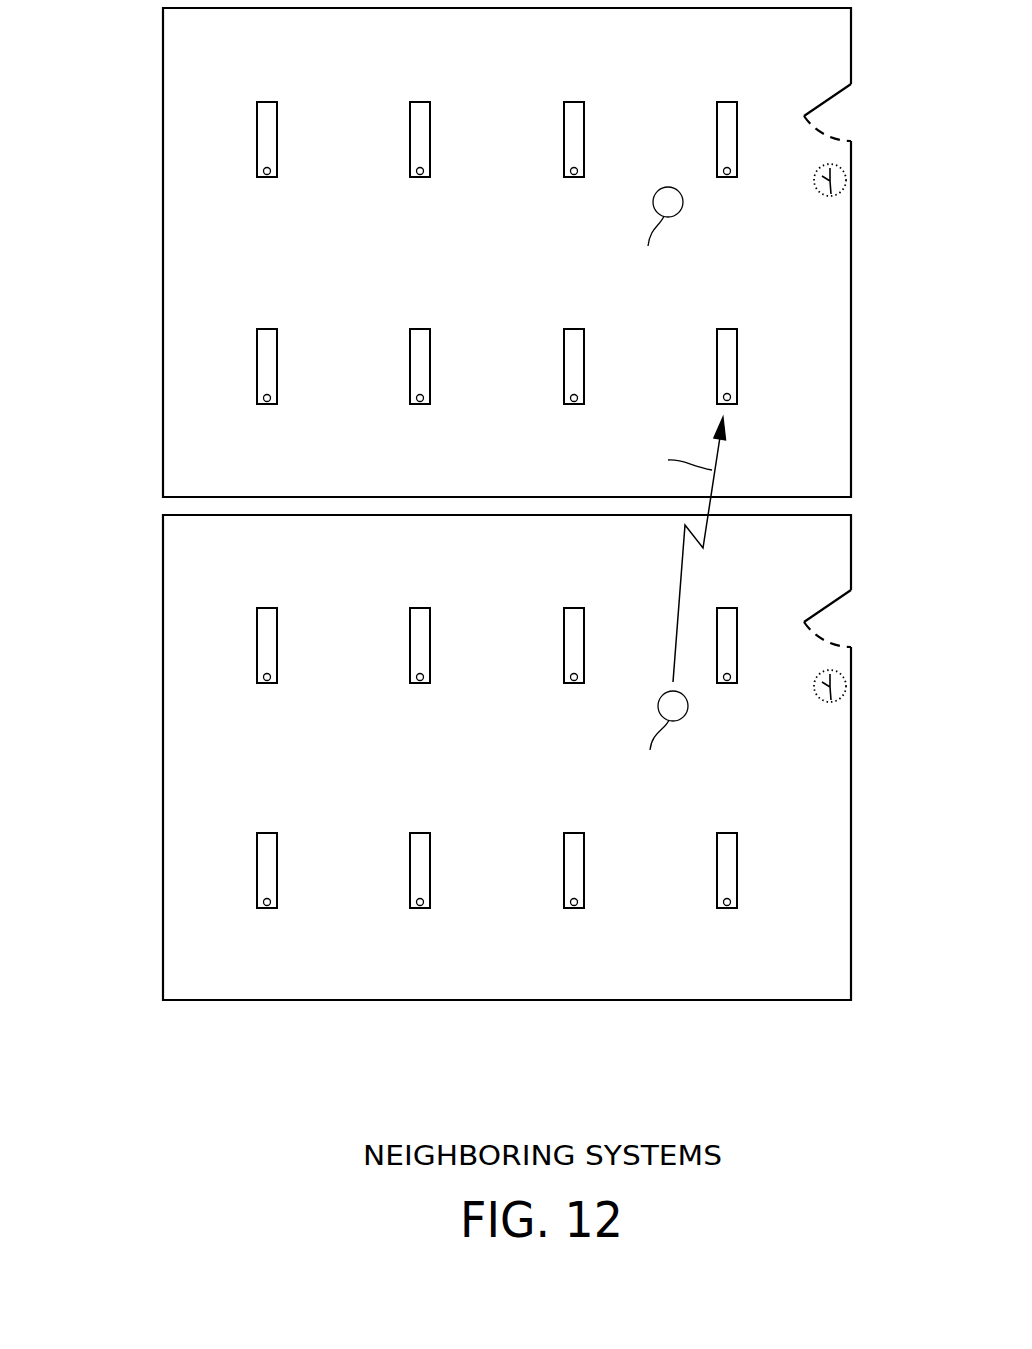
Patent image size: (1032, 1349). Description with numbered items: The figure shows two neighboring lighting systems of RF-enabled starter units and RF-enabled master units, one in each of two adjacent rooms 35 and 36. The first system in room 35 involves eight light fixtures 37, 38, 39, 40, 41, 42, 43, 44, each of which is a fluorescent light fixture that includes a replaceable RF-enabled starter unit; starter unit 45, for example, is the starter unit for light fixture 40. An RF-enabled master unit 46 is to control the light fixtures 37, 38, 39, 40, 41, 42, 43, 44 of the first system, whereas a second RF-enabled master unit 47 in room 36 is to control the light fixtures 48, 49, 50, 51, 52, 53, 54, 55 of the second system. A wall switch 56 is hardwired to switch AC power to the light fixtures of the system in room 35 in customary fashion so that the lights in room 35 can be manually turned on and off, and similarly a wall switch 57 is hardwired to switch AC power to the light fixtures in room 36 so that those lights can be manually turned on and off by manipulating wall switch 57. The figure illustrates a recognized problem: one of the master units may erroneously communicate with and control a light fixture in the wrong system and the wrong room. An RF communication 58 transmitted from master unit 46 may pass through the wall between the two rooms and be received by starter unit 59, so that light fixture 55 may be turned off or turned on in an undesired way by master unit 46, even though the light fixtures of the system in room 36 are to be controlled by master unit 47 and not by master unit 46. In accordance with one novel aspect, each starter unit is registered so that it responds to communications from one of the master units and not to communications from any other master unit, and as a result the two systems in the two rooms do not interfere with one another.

The room 35 is at (163, 581).
The room 36 is at (163, 78).
The light fixture 37 is at (267, 608).
The light fixture 38 is at (420, 608).
The light fixture 39 is at (574, 608).
The light fixture 40 is at (727, 608).
The light fixture 41 is at (267, 833).
The light fixture 42 is at (420, 833).
The light fixture 43 is at (574, 833).
The light fixture 44 is at (727, 833).
The starter unit 45 is at (727, 681).
The RF-enabled master unit 46 is at (687, 710).
The RF-enabled master unit 47 is at (682, 206).
The light fixture 48 is at (267, 102).
The light fixture 49 is at (420, 102).
The light fixture 50 is at (574, 102).
The light fixture 51 is at (727, 102).
The light fixture 52 is at (267, 329).
The light fixture 53 is at (420, 329).
The light fixture 54 is at (574, 329).
The light fixture 55 is at (727, 329).
The wall switch 56 is at (851, 684).
The wall switch 57 is at (851, 178).
The RF communication 58 is at (712, 539).
The starter unit 59 is at (731, 397).